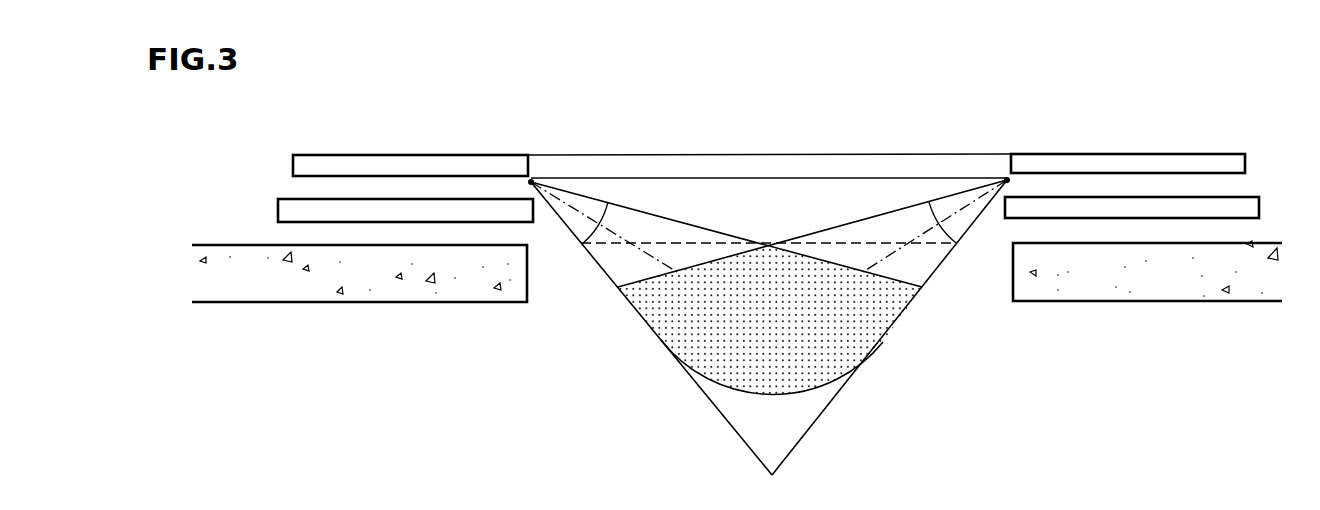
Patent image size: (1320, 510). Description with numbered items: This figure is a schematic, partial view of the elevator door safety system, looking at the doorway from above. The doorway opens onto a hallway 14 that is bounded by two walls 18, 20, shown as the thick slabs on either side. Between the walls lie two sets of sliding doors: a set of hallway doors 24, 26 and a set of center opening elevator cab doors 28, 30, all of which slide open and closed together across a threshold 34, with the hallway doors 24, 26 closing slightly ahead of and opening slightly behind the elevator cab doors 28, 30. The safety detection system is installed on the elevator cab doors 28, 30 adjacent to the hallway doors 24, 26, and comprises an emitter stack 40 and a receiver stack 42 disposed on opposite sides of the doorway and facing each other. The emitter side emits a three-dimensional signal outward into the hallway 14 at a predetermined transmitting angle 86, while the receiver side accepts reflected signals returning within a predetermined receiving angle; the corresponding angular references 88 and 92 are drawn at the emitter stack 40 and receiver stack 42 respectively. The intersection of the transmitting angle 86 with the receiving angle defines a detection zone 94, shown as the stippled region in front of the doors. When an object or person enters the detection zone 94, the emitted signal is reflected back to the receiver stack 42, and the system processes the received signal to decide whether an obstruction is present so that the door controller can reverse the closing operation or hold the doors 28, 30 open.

The hallway 14 is at (785, 217).
The wall 18 is at (453, 292).
The wall 20 is at (1093, 293).
The hallway door 24 is at (288, 210).
The hallway door 26 is at (1248, 208).
The elevator cab door 28 is at (312, 165).
The elevator cab door 30 is at (1227, 163).
The threshold 34 is at (799, 163).
The emitter stack 40 is at (533, 181).
The receiver stack 42 is at (1005, 180).
The transmitting angle 86 is at (612, 222).
The left offset angle 88 is at (647, 252).
The right field-of-view angle 92 is at (937, 227).
The detection zone 94 is at (703, 345).